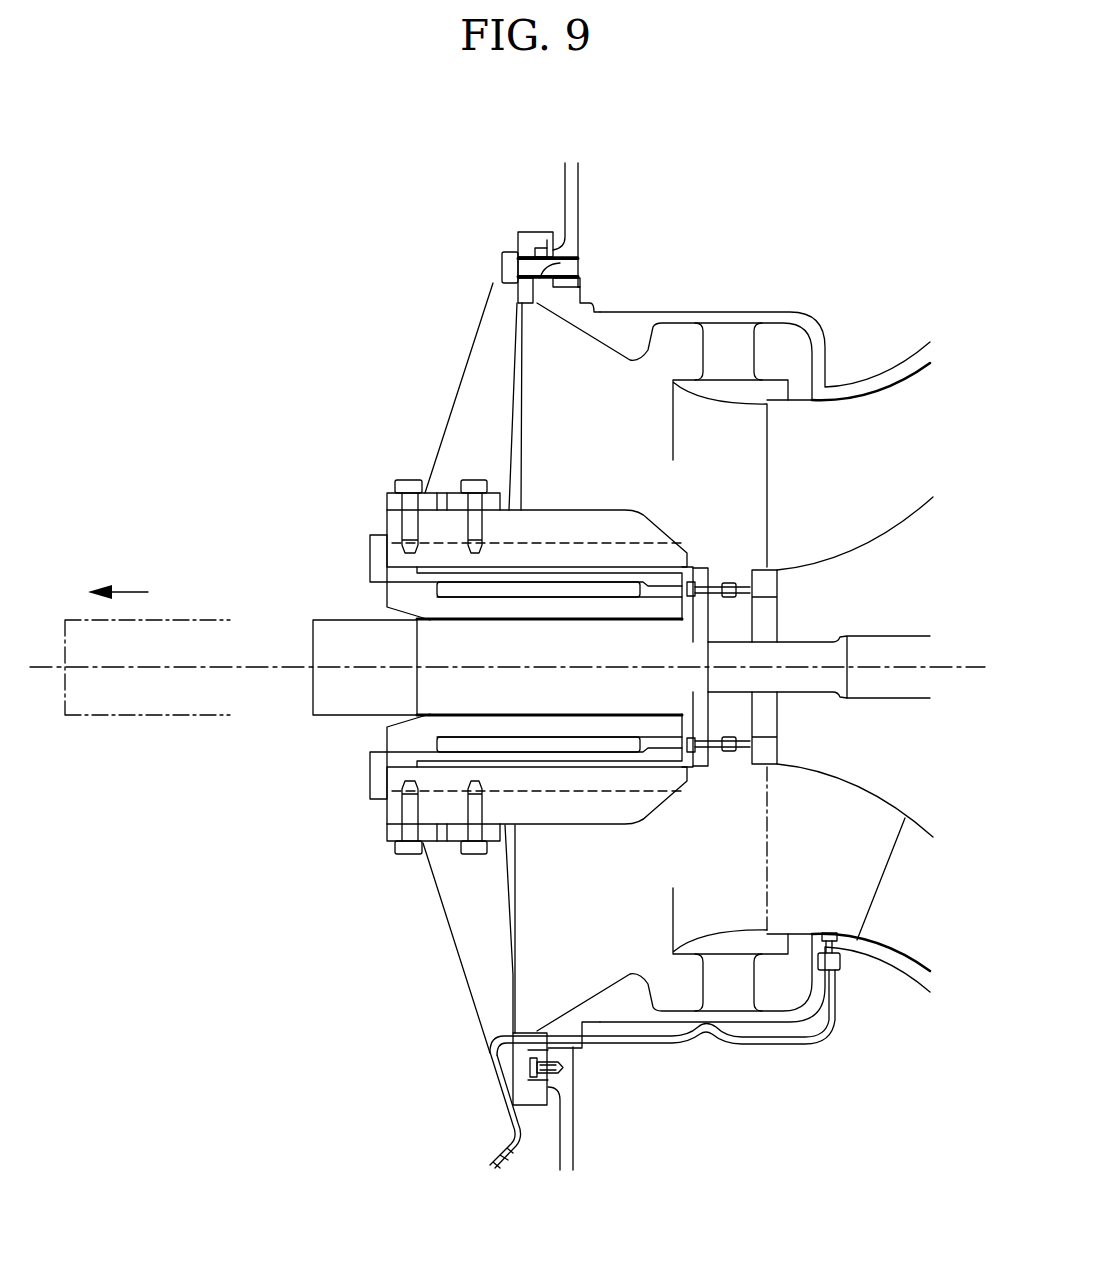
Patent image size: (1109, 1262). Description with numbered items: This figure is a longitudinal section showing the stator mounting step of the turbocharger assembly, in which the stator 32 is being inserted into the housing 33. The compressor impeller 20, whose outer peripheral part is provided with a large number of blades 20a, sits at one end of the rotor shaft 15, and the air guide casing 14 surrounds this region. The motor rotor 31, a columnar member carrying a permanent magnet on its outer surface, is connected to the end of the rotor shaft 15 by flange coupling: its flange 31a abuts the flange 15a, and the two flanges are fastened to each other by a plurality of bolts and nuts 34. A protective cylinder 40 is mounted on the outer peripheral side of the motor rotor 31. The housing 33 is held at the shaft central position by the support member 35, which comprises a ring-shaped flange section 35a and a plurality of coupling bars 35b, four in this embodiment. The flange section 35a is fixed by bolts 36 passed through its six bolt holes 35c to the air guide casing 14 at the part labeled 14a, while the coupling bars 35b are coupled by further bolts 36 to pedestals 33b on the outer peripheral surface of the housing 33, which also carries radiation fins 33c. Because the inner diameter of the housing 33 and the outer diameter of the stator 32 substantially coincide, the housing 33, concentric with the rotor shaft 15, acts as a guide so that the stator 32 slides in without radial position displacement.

The air guide casing 14 is at (765, 311).
The housing flange 14a is at (562, 266).
The rotor shaft 15 is at (900, 650).
The flange 15a is at (722, 580).
The compressor impeller 20 is at (863, 765).
The blades 20a is at (903, 897).
The motor rotor 31 is at (612, 645).
The flange 31a is at (708, 580).
The stator 32 is at (398, 597).
The housing 33 is at (385, 525).
The pedestals 33b is at (385, 500).
The radiation fins 33c is at (593, 542).
The bolts and nuts 34 is at (742, 584).
The support member 35 is at (512, 222).
The flange section 35a is at (528, 302).
The coupling bars 35b is at (480, 358).
The bolt holes 35c is at (543, 252).
The bolts 36 is at (502, 268).
The protective cylinder 40 is at (118, 718).